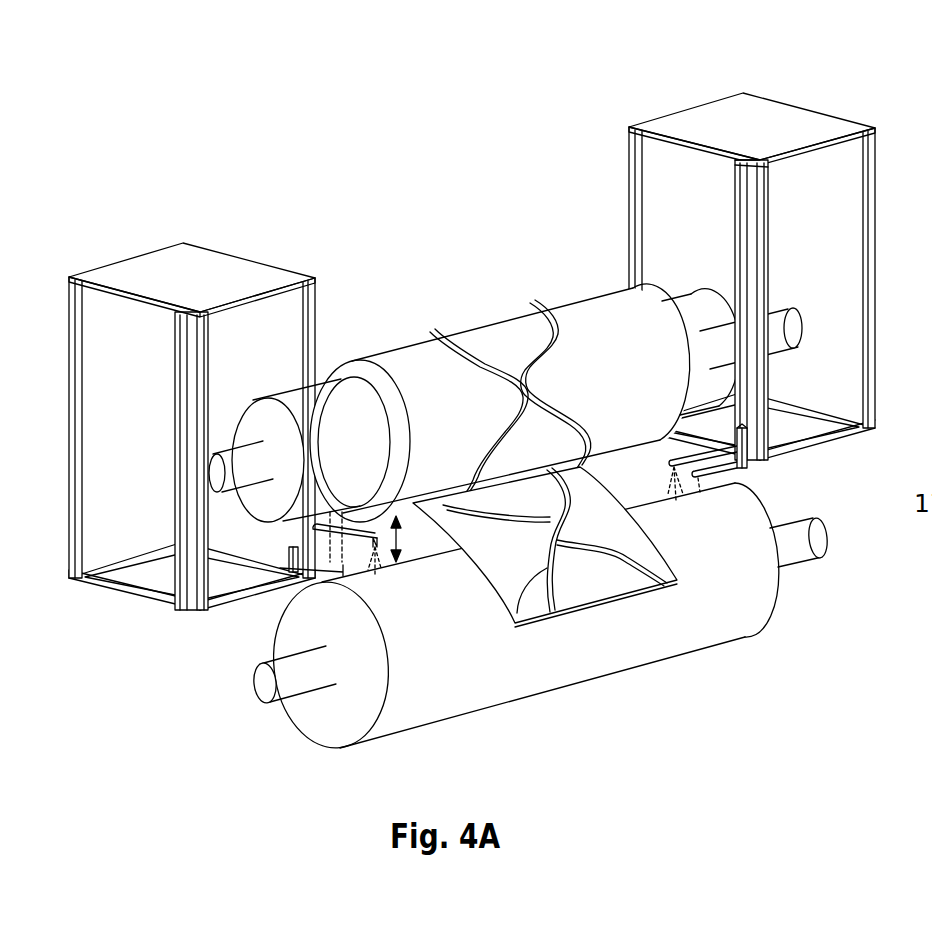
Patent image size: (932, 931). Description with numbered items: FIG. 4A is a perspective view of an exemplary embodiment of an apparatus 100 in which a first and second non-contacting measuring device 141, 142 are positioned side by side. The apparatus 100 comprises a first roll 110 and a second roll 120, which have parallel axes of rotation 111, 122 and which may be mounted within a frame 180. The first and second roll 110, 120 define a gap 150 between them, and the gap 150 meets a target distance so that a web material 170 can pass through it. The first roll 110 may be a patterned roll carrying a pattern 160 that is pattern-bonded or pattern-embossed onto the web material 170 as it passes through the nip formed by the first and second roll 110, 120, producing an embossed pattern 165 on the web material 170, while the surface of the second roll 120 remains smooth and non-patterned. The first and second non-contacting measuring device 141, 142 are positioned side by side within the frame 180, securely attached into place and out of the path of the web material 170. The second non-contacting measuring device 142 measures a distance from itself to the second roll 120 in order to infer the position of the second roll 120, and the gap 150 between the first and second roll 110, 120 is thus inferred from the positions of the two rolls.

The apparatus 100 is at (334, 238).
The first roll 110 is at (380, 348).
The axis of rotation 111 is at (770, 312).
The second roll 120 is at (577, 687).
The axis of rotation 122 is at (808, 545).
The first non-contacting measuring device 141 is at (322, 580).
The second non-contacting measuring device 142 is at (140, 593).
The gap 150 is at (401, 556).
The pattern 160 is at (432, 336).
The embossed pattern 165 is at (517, 620).
The web material 170 is at (610, 598).
The frame 180 is at (125, 262).